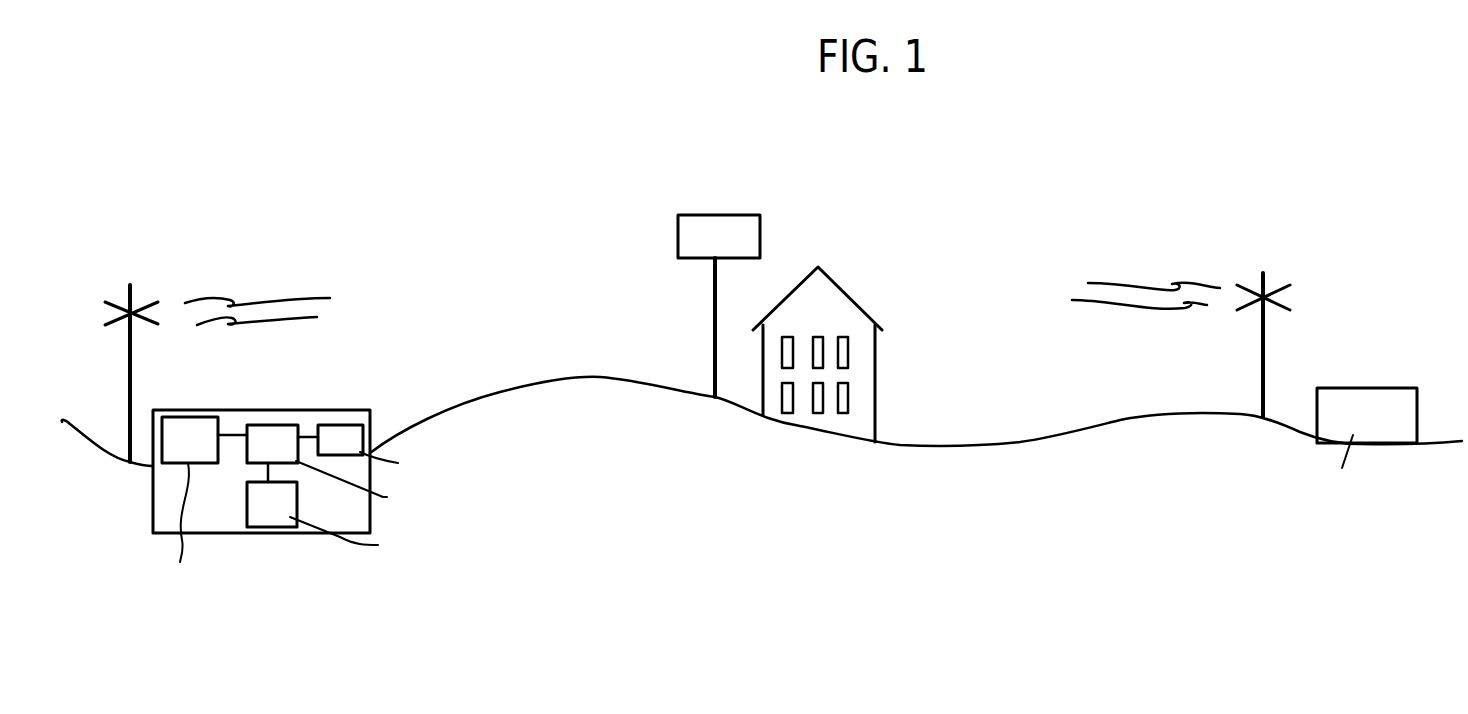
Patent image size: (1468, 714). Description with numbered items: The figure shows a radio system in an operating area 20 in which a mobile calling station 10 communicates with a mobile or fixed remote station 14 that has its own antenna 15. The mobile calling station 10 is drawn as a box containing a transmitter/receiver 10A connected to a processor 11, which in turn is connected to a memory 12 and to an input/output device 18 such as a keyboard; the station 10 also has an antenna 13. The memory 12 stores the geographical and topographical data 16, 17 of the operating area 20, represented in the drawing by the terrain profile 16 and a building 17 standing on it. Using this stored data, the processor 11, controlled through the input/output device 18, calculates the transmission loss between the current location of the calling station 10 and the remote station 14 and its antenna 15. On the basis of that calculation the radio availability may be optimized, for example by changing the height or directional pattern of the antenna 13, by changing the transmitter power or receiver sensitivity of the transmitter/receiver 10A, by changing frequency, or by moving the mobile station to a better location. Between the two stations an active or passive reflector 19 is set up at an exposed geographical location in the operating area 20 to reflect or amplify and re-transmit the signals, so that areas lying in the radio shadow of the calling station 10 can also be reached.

The mobile calling station 10 is at (207, 410).
The transmitter/receiver 10A is at (168, 457).
The processor 11 is at (272, 424).
The memory 12 is at (337, 428).
The antenna 13 is at (128, 368).
The remote station 14 is at (1372, 398).
The antenna 15 is at (1265, 357).
The geographical data 16 is at (588, 426).
The topographical data 17 is at (868, 385).
The input/output device 18 is at (247, 505).
The reflector 19 is at (753, 242).
The operating area 20 is at (914, 229).